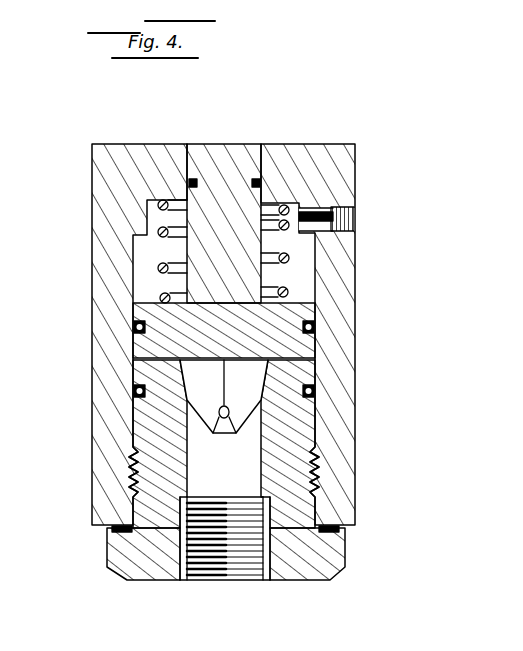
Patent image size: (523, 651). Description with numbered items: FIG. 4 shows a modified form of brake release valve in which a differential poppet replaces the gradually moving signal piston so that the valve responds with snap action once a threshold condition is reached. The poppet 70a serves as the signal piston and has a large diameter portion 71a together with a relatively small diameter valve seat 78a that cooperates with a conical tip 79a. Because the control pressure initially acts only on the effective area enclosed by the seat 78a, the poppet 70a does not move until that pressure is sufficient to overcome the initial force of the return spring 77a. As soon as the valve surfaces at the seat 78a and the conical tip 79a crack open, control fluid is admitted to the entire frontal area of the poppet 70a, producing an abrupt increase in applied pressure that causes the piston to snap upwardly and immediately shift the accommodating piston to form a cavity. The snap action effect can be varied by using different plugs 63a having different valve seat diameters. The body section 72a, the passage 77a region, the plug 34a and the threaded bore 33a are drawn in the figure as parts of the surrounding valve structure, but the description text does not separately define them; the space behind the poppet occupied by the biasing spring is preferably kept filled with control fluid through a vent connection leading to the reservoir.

The plunger 72a is at (237, 146).
The return spring 77a is at (292, 207).
The plug 34a is at (352, 219).
The large diameter portion 71a is at (135, 325).
The poppet 70a is at (226, 345).
The valve seat 78a is at (149, 405).
The conical tip 79a is at (245, 428).
The plug 63a is at (345, 553).
The threaded bore 33a is at (197, 582).